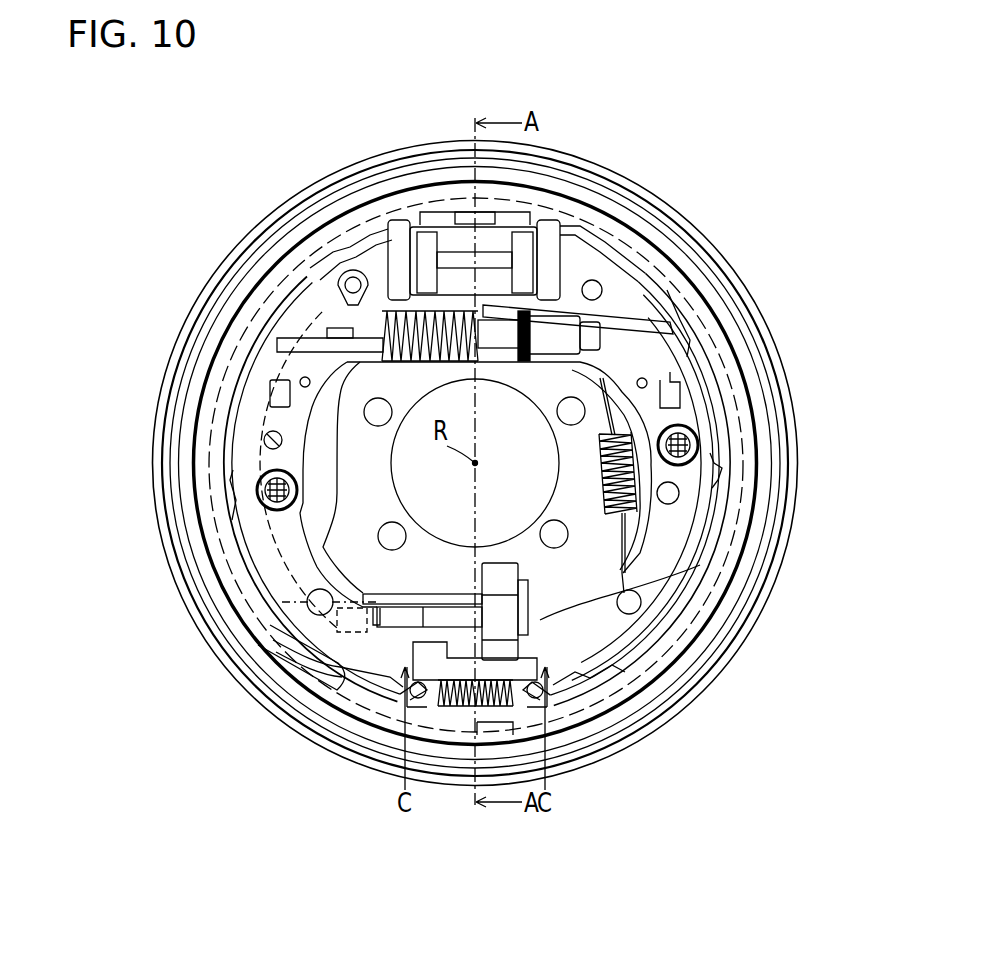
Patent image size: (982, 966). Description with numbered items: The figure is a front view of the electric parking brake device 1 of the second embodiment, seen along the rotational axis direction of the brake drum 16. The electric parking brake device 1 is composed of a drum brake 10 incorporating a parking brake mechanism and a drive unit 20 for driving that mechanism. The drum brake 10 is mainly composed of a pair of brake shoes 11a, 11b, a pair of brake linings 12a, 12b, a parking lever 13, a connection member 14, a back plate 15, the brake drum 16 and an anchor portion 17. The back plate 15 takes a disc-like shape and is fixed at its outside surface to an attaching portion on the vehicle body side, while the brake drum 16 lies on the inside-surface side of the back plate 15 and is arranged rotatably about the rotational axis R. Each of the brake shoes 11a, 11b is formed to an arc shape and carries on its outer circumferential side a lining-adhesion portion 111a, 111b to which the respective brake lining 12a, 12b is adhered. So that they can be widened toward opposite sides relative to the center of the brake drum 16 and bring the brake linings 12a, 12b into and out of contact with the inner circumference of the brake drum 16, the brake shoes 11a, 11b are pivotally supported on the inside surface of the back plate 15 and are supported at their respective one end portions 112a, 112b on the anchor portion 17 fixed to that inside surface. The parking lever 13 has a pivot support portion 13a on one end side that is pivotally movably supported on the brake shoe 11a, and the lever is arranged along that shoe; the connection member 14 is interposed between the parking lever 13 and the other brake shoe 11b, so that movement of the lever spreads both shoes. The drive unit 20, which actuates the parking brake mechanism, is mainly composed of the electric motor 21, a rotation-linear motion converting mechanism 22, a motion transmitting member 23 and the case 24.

The electric parking brake device 1 is at (506, 400).
The drum brake 10 is at (613, 155).
The brake shoe 11a is at (253, 523).
The brake shoe 11b is at (693, 497).
The brake lining 12a is at (245, 520).
The brake lining 12b is at (725, 425).
The parking lever 13 is at (317, 520).
The pivot support portion 13a is at (345, 270).
The connection member 14 is at (562, 335).
The back plate 15 is at (360, 550).
The brake drum 16 is at (797, 462).
The anchor portion 17 is at (548, 695).
The drive unit 20 is at (552, 584).
The electric motor 21 is at (560, 640).
The rotation-linear motion converting mechanism 22 is at (365, 655).
The motion transmitting member 23 is at (330, 640).
The case 24 is at (522, 600).
The lining-adhesion portion 111a is at (262, 405).
The lining-adhesion portion 111b is at (693, 350).
The one end portion 112a is at (395, 655).
The one end portion 112b is at (590, 635).